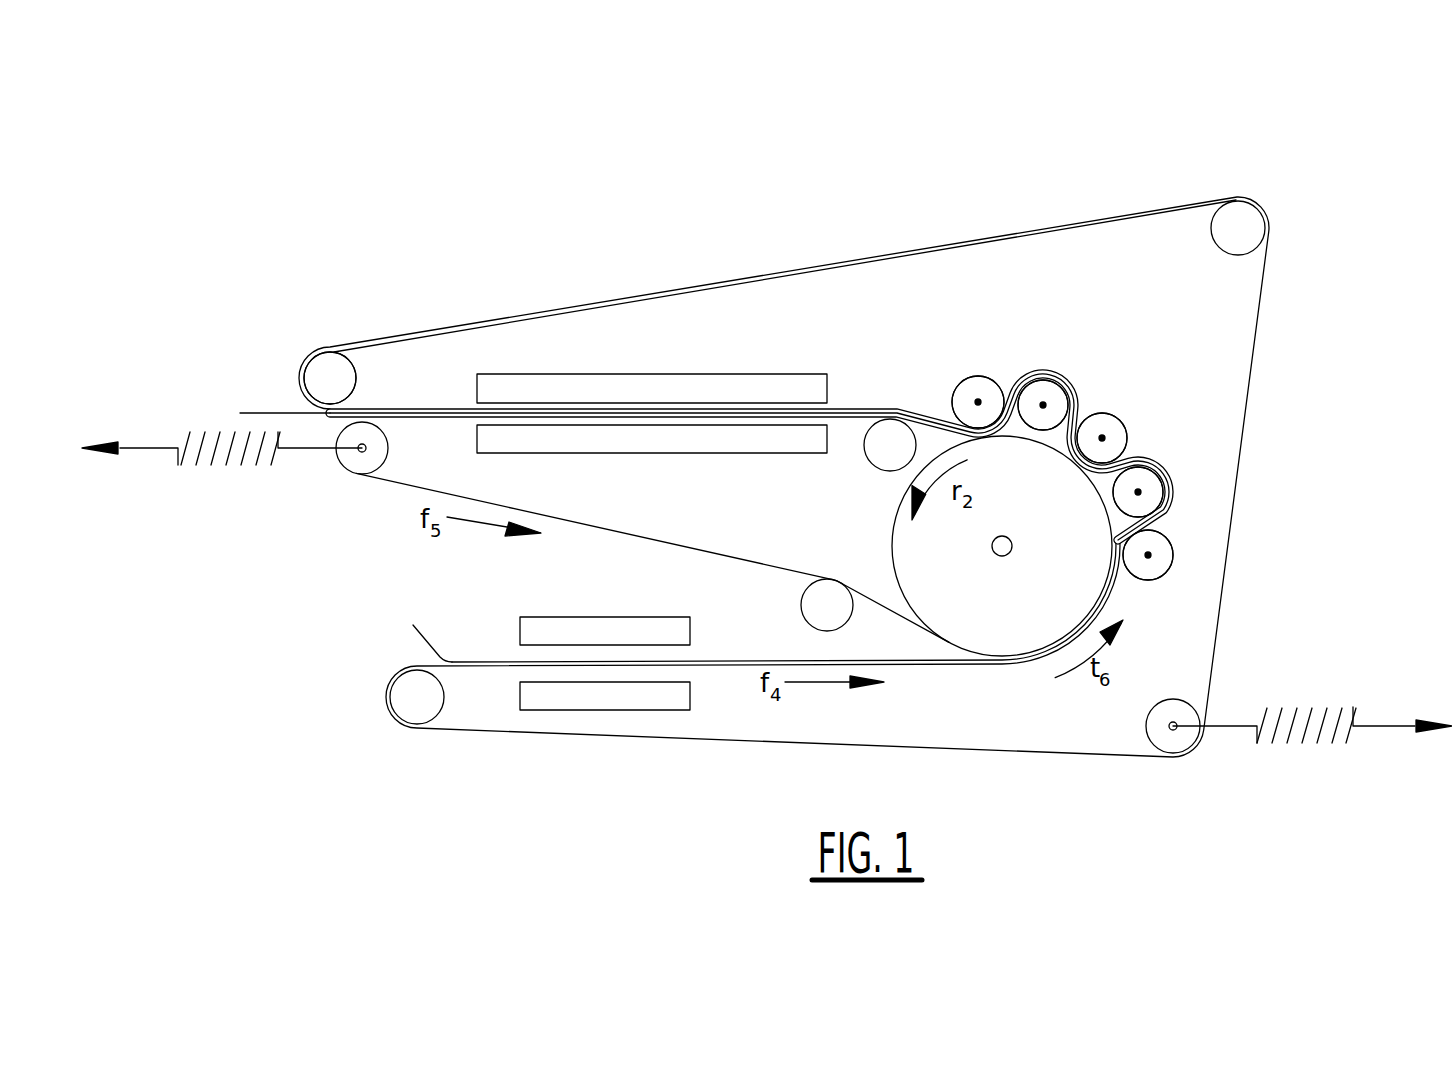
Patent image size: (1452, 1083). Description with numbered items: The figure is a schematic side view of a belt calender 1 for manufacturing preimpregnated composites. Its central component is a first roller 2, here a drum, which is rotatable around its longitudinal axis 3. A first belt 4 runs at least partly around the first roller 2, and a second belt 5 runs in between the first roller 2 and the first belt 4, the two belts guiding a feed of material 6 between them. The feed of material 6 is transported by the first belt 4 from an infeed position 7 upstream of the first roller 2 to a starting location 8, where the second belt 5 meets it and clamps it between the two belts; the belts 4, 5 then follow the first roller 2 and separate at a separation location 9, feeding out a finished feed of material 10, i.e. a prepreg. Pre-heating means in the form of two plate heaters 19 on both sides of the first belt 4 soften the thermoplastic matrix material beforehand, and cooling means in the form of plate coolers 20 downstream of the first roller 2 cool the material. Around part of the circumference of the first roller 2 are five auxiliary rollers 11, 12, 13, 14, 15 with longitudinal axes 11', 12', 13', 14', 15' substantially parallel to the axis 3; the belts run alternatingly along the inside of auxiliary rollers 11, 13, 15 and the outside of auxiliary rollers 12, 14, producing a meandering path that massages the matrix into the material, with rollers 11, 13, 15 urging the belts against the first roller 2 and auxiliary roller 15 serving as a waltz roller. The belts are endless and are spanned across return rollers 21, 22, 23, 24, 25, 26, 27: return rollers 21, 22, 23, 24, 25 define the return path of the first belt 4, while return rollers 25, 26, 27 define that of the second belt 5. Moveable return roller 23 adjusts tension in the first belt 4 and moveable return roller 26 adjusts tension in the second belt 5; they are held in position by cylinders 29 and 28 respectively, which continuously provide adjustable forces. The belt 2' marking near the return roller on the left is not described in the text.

The belt calender 1 is at (449, 162).
The first roller 2 is at (1022, 462).
The belt deflection point 2' is at (372, 370).
The longitudinal axis 3 is at (1002, 557).
The first belt 4 is at (1105, 756).
The second belt 5 is at (400, 487).
The feed of material 6 is at (477, 660).
The infeed position 7 is at (365, 639).
The starting location 8 is at (958, 690).
The separation location 9 is at (422, 380).
The finished feed of material 10 is at (283, 412).
The auxiliary roller 11 is at (1154, 607).
The longitudinal axis of auxiliary roller 11' is at (1147, 600).
The auxiliary roller 12 is at (1100, 529).
The longitudinal axis of auxiliary roller 12' is at (1168, 514).
The auxiliary roller 13 is at (1121, 388).
The longitudinal axis of auxiliary roller 13' is at (1155, 434).
The auxiliary roller 14 is at (1040, 452).
The longitudinal axis of auxiliary roller 14' is at (1067, 360).
The auxiliary roller / waltz roller 15 is at (978, 358).
The longitudinal axis of auxiliary roller 15' is at (1000, 362).
The pre-heating means 19 is at (578, 628).
The cooling means 20 is at (758, 385).
The return roller 21 is at (322, 372).
The return roller 22 is at (1245, 220).
The moveable return roller 23 is at (1153, 720).
The return roller 24 is at (427, 702).
The return roller 25 is at (890, 448).
The moveable return roller 26 is at (366, 448).
The return roller 27 is at (815, 603).
The cylinder 28 is at (217, 462).
The cylinder 29 is at (1313, 710).